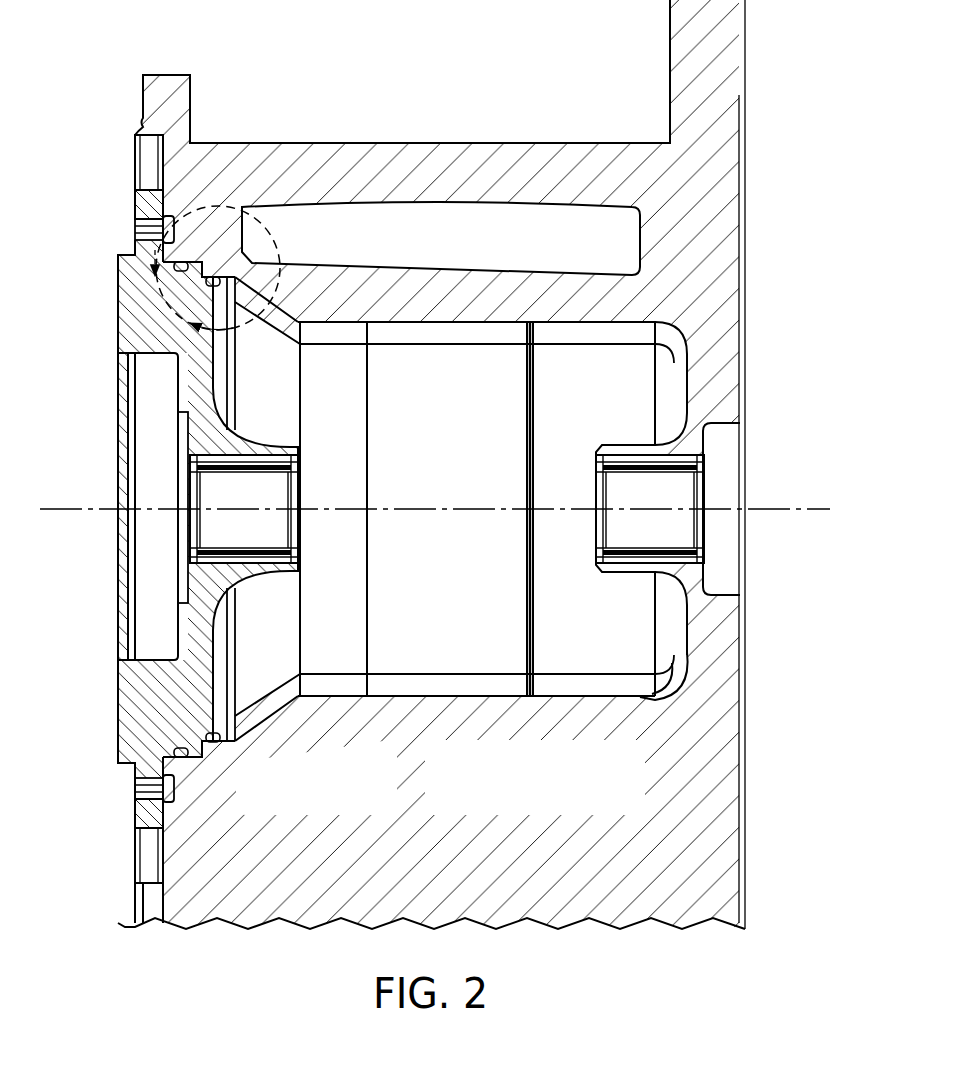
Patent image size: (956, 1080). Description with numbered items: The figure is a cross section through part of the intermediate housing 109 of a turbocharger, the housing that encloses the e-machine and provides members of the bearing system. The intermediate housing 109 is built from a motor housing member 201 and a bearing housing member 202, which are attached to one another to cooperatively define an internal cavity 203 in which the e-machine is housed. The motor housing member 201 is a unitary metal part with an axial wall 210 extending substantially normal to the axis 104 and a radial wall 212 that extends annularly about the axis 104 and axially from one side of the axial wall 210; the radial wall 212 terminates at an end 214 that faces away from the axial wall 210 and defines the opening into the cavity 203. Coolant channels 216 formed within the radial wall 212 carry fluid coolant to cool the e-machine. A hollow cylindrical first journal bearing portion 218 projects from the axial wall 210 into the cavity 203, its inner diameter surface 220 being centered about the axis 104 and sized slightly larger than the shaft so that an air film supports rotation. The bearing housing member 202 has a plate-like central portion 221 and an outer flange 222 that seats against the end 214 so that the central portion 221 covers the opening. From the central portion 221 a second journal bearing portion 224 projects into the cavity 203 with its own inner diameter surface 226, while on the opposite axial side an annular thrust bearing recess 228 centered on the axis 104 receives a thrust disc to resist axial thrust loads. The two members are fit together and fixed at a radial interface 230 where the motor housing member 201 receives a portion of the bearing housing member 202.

The axis 104 is at (825, 508).
The intermediate housing 109 is at (283, 103).
The motor housing member 201 is at (493, 297).
The bearing housing member 202 is at (118, 312).
The internal cavity 203 is at (473, 472).
The axial wall 210 is at (730, 363).
The radial wall 212 is at (513, 152).
The end 214 is at (157, 155).
The coolant channel 216 is at (448, 257).
The first journal bearing portion 218 is at (630, 443).
The inner diameter surface 220 is at (623, 473).
The central portion 221 is at (128, 712).
The outer flange 222 is at (137, 203).
The second journal bearing portion 224 is at (267, 442).
The inner diameter surface 226 is at (278, 479).
The thrust bearing recess 228 is at (182, 577).
The radial interface 230 is at (200, 253).